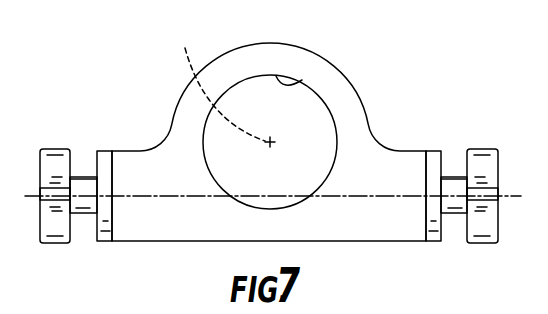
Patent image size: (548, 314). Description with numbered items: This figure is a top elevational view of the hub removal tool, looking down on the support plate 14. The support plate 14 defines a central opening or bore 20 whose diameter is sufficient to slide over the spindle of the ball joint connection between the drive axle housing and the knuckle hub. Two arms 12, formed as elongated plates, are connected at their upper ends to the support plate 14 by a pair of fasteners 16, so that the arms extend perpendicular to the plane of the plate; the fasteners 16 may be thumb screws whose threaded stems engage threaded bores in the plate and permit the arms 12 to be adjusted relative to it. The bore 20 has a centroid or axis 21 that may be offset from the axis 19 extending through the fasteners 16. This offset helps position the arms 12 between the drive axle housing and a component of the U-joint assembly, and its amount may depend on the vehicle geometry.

The arms 12 is at (104, 163).
The support plate 14 is at (384, 102).
The fasteners 16 is at (53, 267).
The axis 19 is at (511, 196).
The bore 20 is at (355, 62).
The axis 21 is at (221, 79).